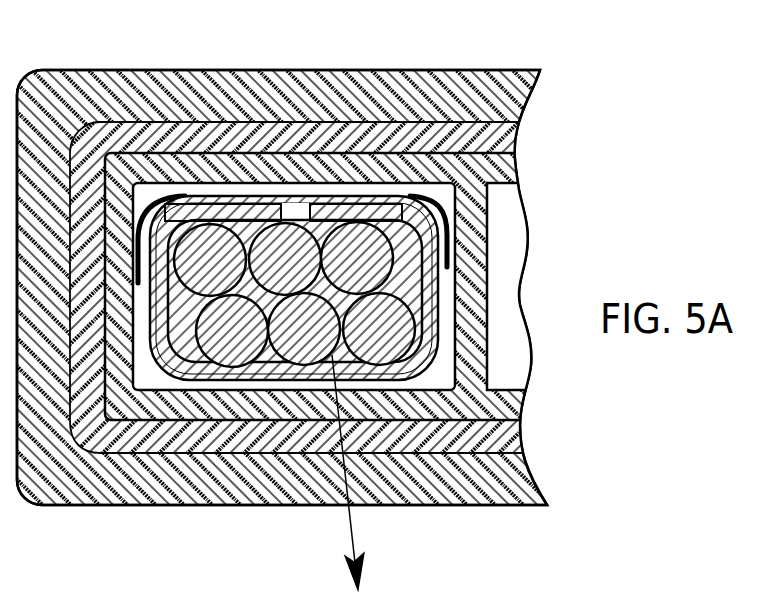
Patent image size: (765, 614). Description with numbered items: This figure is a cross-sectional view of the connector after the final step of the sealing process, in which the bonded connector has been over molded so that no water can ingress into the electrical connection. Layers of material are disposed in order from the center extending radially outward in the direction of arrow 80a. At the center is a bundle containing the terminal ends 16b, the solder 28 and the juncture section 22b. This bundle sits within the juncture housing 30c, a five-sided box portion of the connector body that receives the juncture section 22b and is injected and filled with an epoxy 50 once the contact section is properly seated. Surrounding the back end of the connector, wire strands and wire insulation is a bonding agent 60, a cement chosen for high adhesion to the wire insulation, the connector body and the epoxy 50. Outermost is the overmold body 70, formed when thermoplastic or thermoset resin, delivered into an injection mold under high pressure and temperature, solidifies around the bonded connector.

The epoxy 50 is at (157, 183).
The juncture housing 30c is at (212, 163).
The bonding agent 60 is at (328, 130).
The overmold body 70 is at (467, 93).
The terminal ends 16b is at (394, 313).
The solder 28 is at (408, 287).
The juncture section 22b is at (192, 367).
The arrow 80a is at (355, 539).